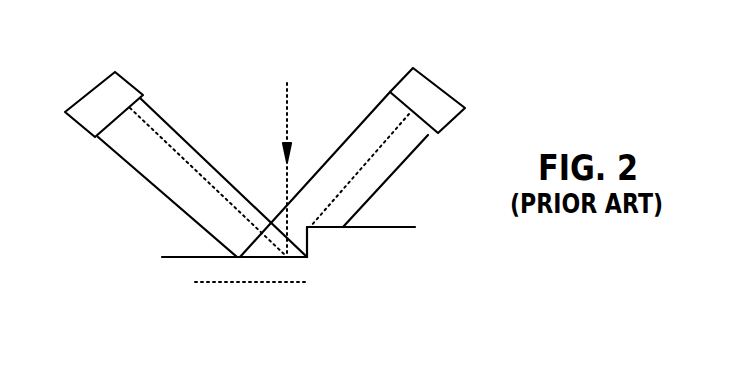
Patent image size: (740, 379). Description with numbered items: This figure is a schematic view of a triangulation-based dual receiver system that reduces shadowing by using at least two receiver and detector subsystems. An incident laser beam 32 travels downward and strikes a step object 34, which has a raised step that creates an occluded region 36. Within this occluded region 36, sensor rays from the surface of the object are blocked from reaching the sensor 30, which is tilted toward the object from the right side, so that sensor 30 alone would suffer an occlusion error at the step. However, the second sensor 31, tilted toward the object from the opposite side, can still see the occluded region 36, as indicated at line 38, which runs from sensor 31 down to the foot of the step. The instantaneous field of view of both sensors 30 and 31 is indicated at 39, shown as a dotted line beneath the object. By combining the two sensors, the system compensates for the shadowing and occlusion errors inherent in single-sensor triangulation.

The sensor 30 is at (448, 93).
The sensor 31 is at (102, 82).
The incident laser beam 32 is at (289, 106).
The step object 34 is at (396, 227).
The occluded region 36 is at (308, 243).
The line 38 is at (168, 122).
The IFOV 39 is at (210, 282).